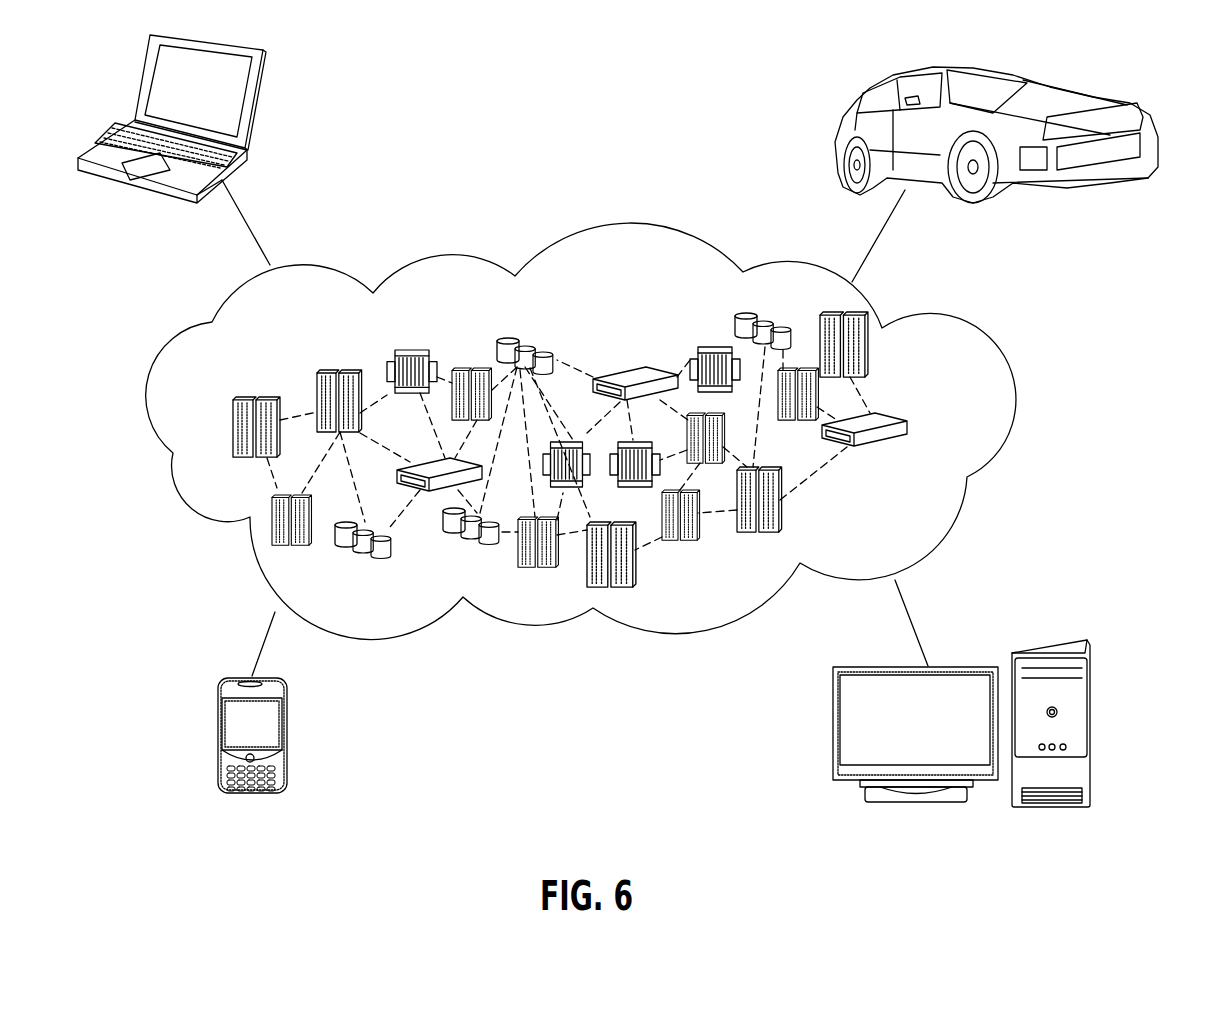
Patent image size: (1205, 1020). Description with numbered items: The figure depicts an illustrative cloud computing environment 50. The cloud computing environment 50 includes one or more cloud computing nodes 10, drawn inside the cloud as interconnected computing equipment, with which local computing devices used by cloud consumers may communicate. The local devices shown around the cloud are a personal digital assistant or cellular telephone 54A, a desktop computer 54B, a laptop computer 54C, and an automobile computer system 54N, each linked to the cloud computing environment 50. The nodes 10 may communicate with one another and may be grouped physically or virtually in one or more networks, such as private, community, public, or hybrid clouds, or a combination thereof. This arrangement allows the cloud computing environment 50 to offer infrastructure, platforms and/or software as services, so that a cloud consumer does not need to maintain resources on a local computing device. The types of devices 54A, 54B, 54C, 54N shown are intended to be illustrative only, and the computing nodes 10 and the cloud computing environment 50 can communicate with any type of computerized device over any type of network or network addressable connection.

The cloud computing node 10 is at (947, 427).
The cloud computing environment 50 is at (973, 340).
The personal digital assistant or cellular telephone 54A is at (220, 740).
The desktop computer 54B is at (1053, 640).
The laptop computer 54C is at (258, 106).
The automobile computer system 54N is at (845, 115).